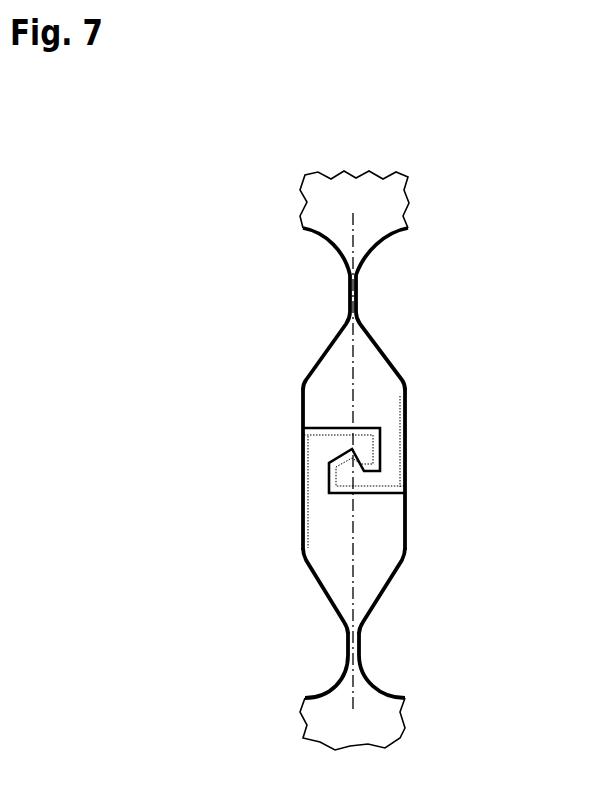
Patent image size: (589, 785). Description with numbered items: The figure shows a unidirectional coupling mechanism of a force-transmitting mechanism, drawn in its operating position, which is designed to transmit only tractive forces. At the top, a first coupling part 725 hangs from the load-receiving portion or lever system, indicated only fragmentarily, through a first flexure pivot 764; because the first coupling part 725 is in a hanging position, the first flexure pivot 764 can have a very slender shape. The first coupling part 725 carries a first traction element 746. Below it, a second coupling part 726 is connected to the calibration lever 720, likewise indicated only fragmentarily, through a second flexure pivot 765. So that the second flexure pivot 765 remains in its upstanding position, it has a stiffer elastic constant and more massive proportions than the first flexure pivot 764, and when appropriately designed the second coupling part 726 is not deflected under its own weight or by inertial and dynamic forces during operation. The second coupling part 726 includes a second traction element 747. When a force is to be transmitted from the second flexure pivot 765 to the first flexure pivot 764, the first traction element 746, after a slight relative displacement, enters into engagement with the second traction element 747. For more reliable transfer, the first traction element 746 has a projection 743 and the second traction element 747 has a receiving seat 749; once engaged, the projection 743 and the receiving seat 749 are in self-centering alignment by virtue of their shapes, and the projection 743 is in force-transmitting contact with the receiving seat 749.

The calibration lever 720 is at (343, 715).
The first coupling part 725 is at (370, 383).
The second coupling part 726 is at (335, 553).
The projection 743 is at (353, 458).
The first traction element 746 is at (395, 453).
The second traction element 747 is at (310, 460).
The receiving seat 749 is at (352, 449).
The first flexure pivot 764 is at (357, 296).
The second flexure pivot 765 is at (348, 640).